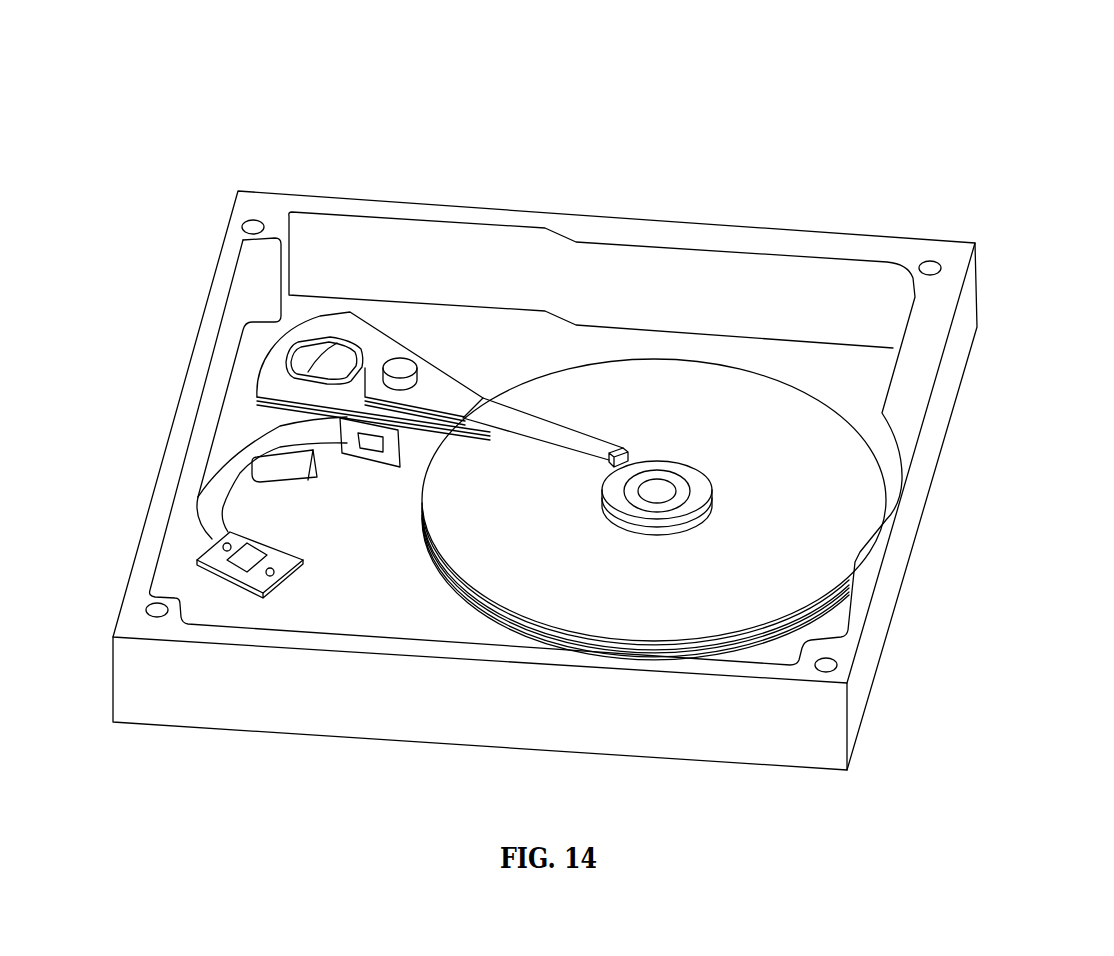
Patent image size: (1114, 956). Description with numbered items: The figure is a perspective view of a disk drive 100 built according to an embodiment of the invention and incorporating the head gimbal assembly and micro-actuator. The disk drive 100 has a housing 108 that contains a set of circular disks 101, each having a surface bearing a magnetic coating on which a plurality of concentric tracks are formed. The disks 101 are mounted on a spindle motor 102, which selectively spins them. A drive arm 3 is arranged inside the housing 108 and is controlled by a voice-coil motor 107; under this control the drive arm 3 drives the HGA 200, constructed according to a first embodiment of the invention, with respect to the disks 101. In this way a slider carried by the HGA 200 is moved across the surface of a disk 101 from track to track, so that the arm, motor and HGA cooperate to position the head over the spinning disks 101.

The disk drive 100 is at (240, 64).
The drive arm 3 is at (443, 388).
The HGA 200 is at (565, 421).
The circular disks 101 is at (772, 420).
The spindle motor 102 is at (680, 494).
The voice-coil motor 107 is at (277, 463).
The housing 108 is at (595, 722).